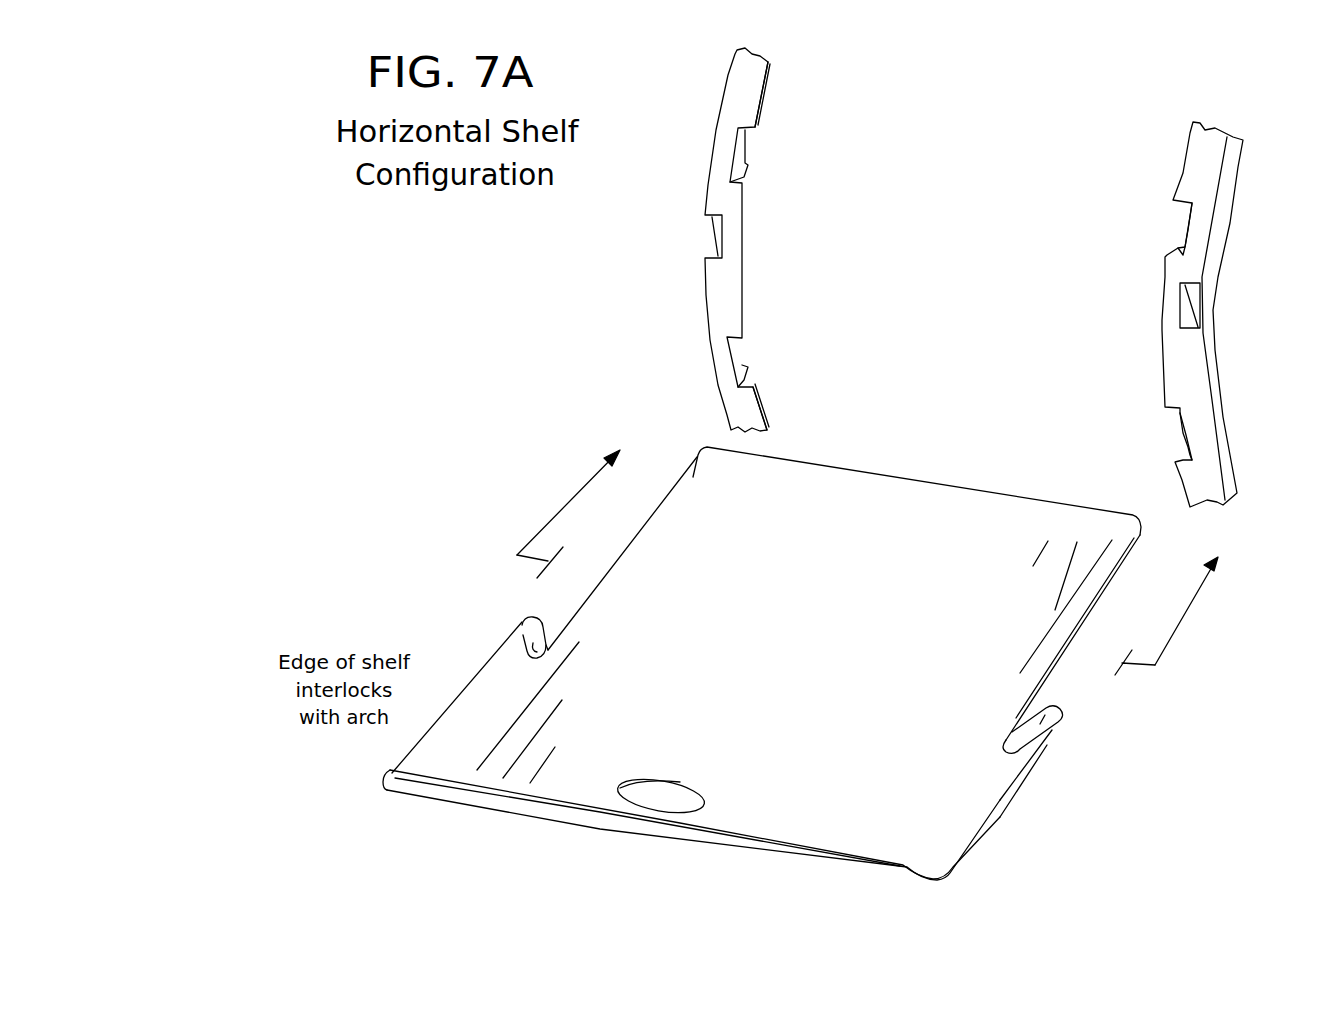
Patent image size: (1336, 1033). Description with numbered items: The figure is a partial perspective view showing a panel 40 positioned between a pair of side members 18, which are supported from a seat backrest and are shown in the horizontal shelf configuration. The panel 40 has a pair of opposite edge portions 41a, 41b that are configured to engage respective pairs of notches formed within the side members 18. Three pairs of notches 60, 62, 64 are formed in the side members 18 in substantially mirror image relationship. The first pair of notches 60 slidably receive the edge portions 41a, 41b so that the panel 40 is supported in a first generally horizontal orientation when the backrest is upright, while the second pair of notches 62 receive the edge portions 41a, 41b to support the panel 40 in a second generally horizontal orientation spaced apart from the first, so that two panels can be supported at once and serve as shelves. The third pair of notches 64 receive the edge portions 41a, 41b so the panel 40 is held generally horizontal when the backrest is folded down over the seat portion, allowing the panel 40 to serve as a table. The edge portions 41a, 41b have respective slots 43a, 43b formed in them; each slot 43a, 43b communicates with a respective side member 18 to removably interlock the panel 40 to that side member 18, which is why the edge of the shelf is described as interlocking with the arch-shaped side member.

The side member 18 is at (740, 82).
The panel 40 is at (888, 507).
The edge portion 41a is at (691, 476).
The edge portion 41b is at (1113, 580).
The slot 43a is at (540, 640).
The slot 43b is at (1008, 722).
The first pair of notches 60 is at (740, 353).
The second pair of notches 62 is at (740, 153).
The third pair of notches 64 is at (715, 233).